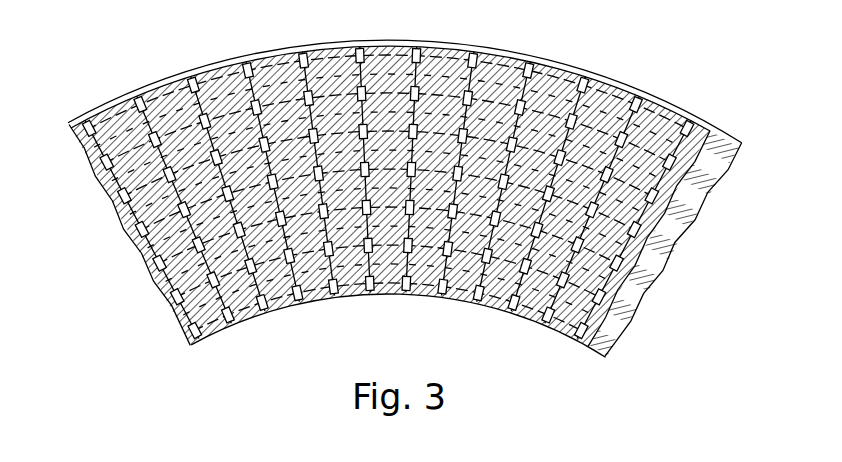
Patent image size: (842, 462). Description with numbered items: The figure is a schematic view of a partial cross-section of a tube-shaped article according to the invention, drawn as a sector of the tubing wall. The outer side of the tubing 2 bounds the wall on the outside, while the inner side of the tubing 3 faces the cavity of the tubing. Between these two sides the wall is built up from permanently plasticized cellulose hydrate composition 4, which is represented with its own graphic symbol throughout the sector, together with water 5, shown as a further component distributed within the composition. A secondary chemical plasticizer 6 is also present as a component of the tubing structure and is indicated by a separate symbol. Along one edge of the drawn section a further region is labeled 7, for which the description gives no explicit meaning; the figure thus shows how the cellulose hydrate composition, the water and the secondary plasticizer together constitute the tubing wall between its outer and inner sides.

The outer side of the tubing 2 is at (388, 33).
The inner side of the tubing 3 is at (378, 297).
The permanently plasticized cellulose hydrate composition 4 is at (723, 165).
The water 5 is at (653, 97).
The secondary chemical plasticizer 6 is at (566, 74).
The edge contact strip 7 is at (694, 125).